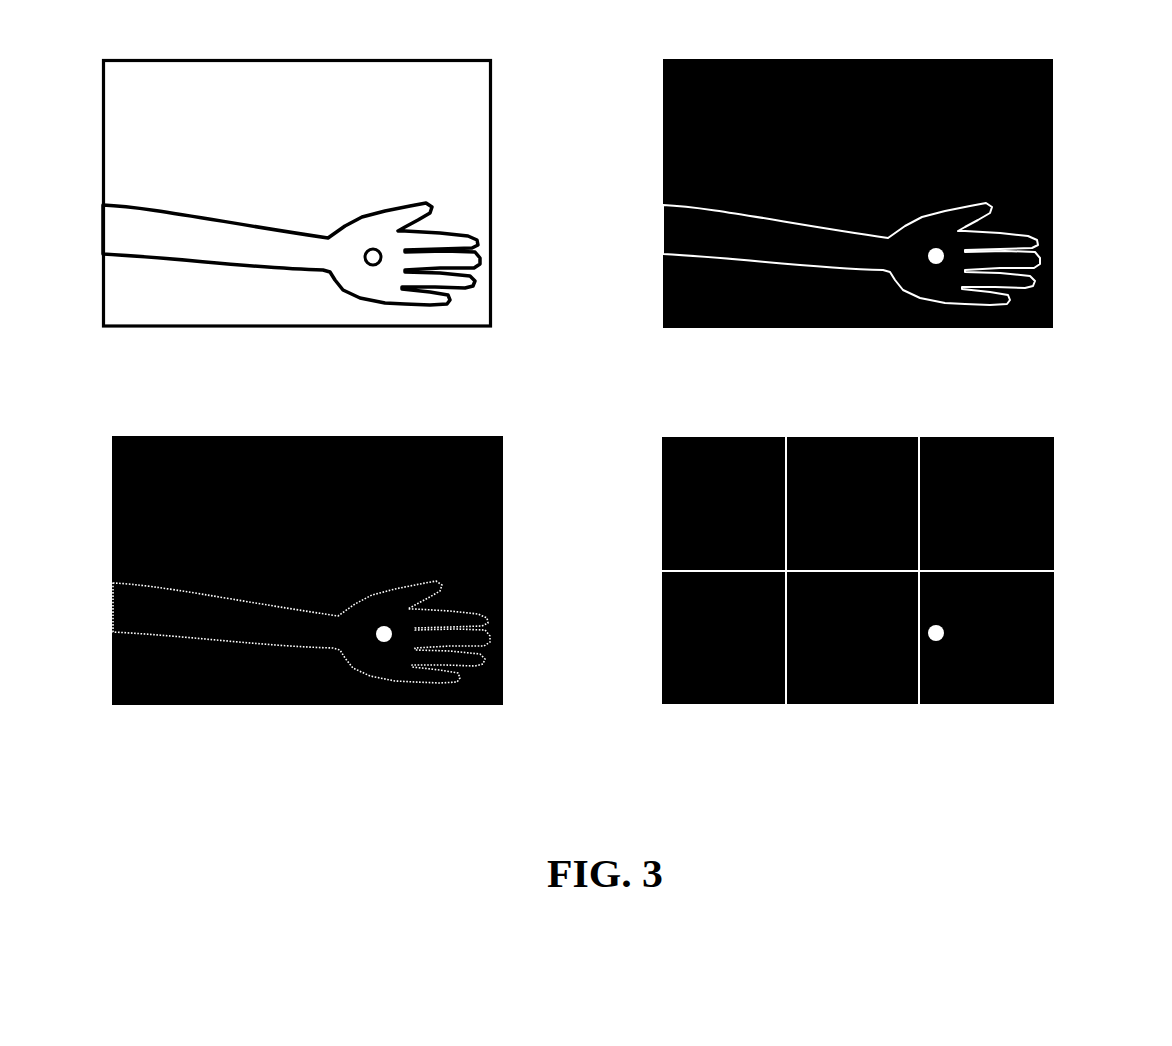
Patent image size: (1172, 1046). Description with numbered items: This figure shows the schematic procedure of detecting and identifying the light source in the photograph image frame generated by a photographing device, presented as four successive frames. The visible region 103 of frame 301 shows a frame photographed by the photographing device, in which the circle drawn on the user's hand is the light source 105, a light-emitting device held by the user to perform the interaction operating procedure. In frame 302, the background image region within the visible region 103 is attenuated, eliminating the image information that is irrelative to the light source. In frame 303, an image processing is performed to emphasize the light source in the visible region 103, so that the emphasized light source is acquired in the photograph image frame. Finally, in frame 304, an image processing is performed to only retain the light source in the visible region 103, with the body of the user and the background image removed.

The visible region 103 is at (404, 58).
The light source 105 is at (367, 246).
The frame 301 is at (290, 207).
The frame 302 is at (858, 222).
The frame 303 is at (315, 625).
The frame 304 is at (898, 614).